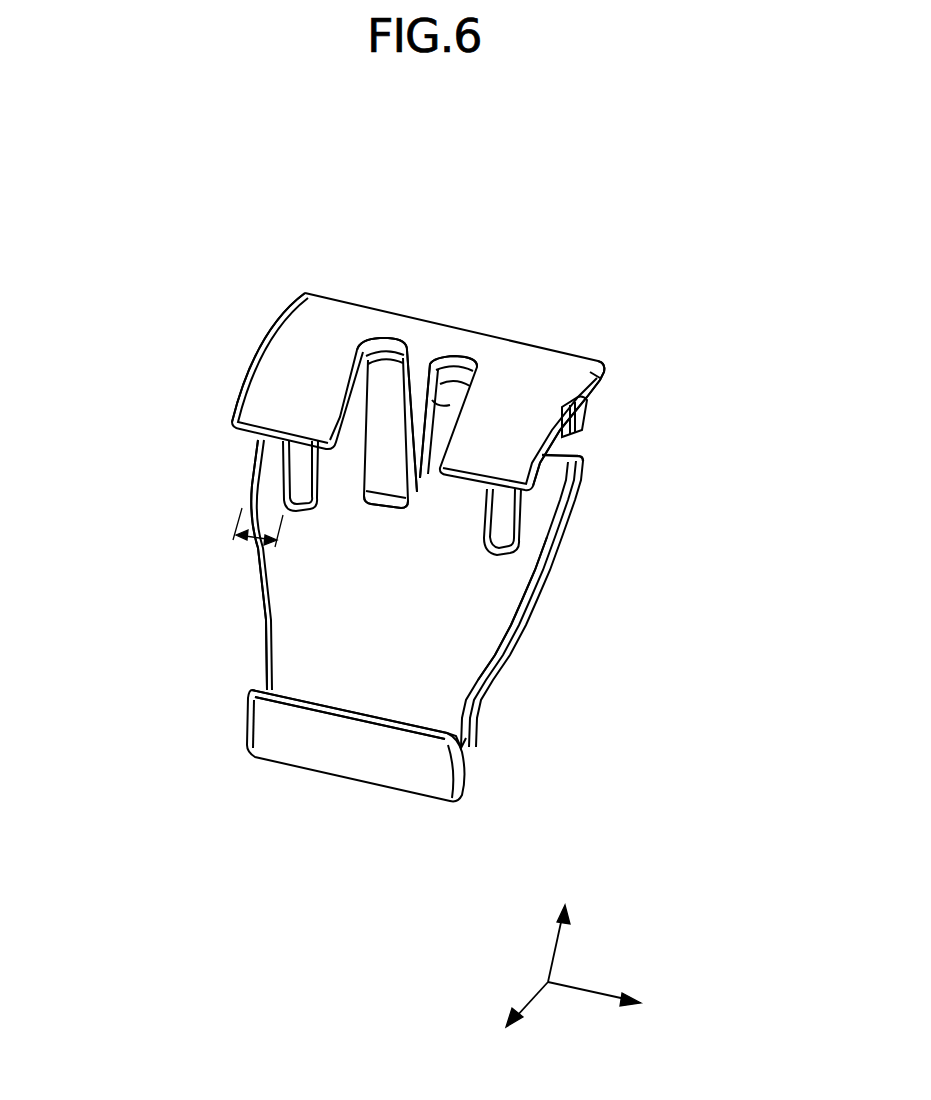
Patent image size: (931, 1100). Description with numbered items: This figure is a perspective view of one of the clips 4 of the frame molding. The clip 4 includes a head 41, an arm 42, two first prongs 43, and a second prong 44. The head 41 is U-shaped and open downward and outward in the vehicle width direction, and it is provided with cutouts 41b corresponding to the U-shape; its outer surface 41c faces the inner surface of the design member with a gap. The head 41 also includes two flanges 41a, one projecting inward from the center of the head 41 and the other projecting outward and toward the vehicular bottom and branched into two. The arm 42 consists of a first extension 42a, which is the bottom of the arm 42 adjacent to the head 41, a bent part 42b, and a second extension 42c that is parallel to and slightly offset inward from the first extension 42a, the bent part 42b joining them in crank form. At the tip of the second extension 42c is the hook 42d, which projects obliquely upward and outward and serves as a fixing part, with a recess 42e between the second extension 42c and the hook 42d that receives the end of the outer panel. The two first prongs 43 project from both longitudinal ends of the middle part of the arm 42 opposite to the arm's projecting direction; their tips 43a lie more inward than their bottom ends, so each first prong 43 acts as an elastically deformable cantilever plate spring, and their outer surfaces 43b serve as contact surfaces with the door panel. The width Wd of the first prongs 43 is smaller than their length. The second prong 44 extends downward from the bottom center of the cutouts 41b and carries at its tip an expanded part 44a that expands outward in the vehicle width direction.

The clip 4 is at (318, 192).
The head 41 is at (535, 342).
The flanges 41a is at (237, 393).
The cutouts 41b is at (377, 340).
The outer surface 41c is at (403, 323).
The arm 42 is at (458, 803).
The first extension 42a is at (457, 507).
The bent part 42b is at (343, 602).
The second extension 42c is at (378, 657).
The hook 42d is at (306, 703).
The recess 42e is at (478, 748).
The first prongs 43 is at (246, 483).
The tips 43a is at (573, 447).
The outer surfaces 43b is at (283, 452).
The second prong 44 is at (377, 417).
The expanded part 44a is at (385, 483).
The width Wd is at (250, 547).